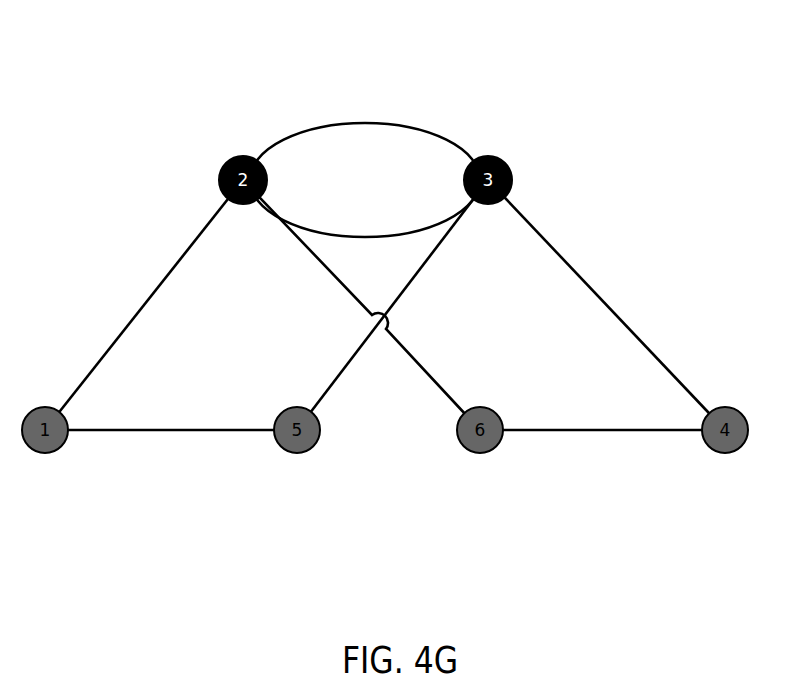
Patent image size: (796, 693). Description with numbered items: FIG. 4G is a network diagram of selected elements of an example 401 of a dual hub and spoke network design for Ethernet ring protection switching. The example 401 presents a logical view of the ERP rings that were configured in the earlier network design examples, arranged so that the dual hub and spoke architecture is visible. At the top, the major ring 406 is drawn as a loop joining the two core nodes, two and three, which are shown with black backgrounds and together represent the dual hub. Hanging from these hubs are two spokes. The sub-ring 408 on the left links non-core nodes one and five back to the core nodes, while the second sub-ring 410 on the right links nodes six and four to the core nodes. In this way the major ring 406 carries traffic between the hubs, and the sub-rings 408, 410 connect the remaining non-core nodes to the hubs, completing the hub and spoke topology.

The example 401 is at (112, 46).
The major ring 406 is at (357, 125).
The sub-ring 408 is at (151, 296).
The second sub-ring 410 is at (590, 429).